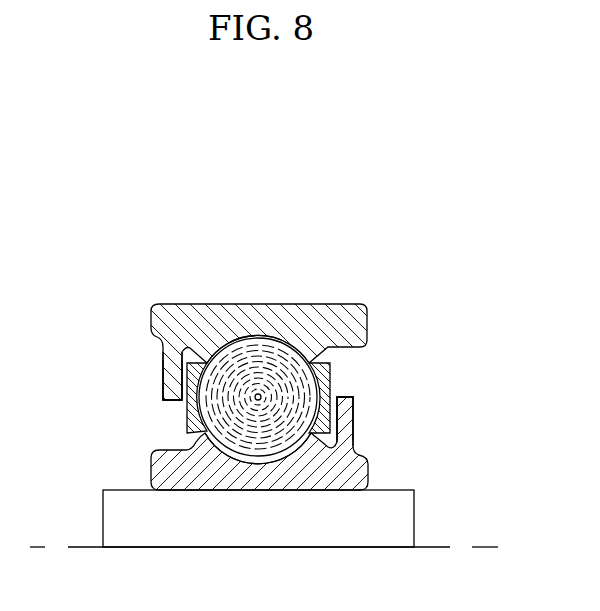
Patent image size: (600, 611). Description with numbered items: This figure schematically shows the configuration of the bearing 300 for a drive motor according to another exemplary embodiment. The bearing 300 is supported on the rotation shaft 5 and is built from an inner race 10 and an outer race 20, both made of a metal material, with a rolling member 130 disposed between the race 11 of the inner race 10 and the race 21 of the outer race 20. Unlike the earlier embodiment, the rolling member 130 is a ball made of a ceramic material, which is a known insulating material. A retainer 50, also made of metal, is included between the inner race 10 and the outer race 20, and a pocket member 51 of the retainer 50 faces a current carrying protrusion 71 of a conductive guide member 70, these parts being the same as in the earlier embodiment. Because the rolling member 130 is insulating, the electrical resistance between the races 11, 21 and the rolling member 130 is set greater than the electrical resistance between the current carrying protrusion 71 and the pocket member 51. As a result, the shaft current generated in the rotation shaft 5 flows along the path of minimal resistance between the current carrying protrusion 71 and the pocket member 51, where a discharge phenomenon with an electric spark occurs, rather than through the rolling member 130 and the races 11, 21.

The bearing for the drive motor 300 is at (125, 240).
The outer race 20 is at (380, 320).
The race 21 is at (240, 352).
The inner race 10 is at (380, 470).
The race 11 is at (253, 442).
The rolling member 130 is at (283, 350).
The retainer 50 is at (352, 370).
The pocket member 51 is at (190, 420).
The conductive guide member 70 is at (150, 378).
The current carrying protrusion 71 is at (172, 357).
The rotation shaft 5 is at (360, 527).